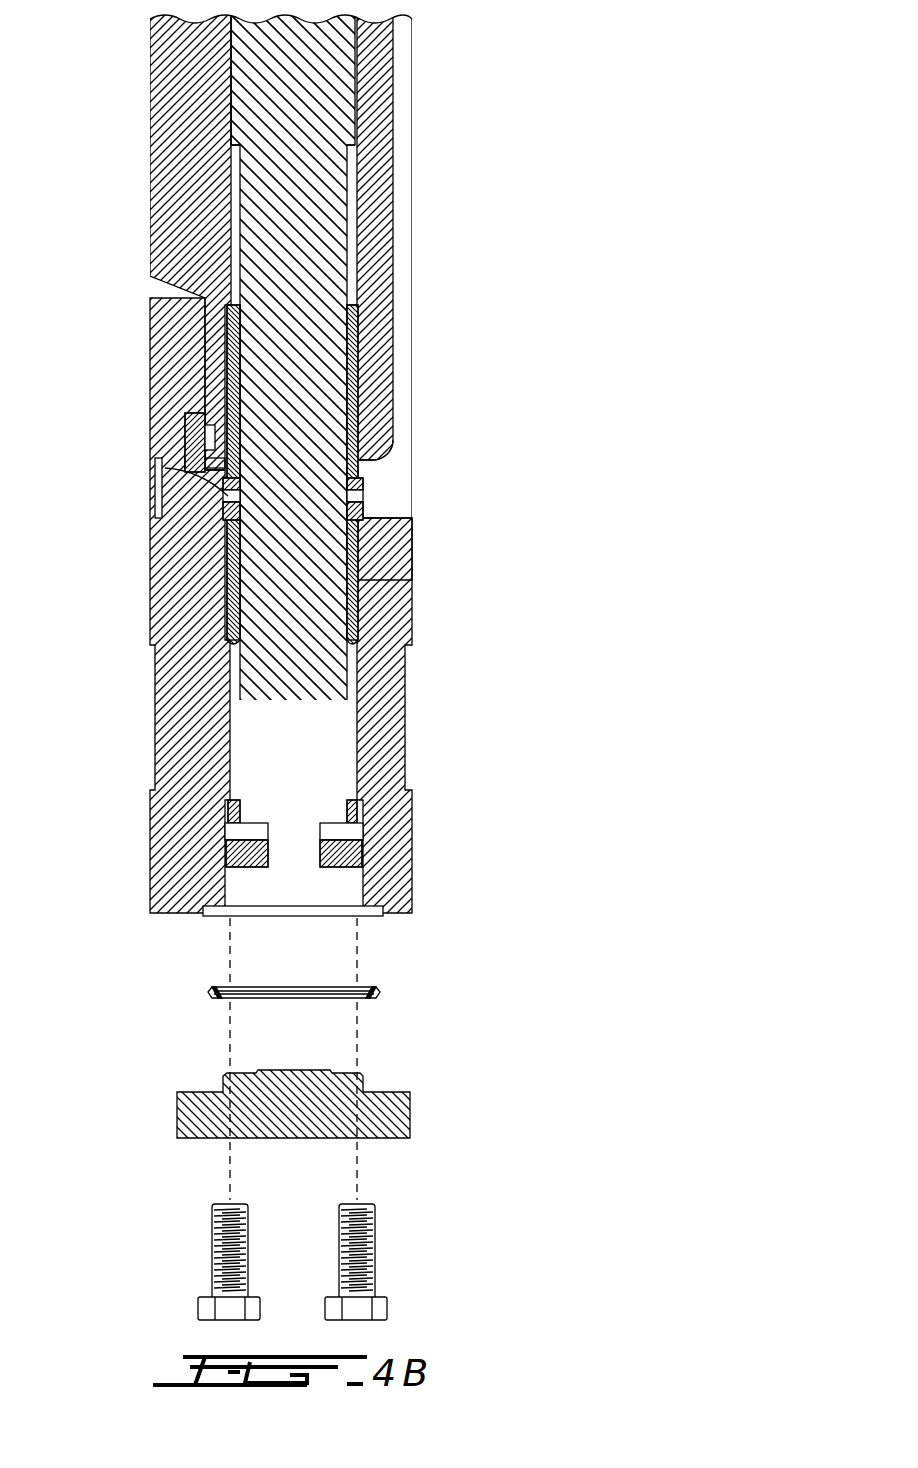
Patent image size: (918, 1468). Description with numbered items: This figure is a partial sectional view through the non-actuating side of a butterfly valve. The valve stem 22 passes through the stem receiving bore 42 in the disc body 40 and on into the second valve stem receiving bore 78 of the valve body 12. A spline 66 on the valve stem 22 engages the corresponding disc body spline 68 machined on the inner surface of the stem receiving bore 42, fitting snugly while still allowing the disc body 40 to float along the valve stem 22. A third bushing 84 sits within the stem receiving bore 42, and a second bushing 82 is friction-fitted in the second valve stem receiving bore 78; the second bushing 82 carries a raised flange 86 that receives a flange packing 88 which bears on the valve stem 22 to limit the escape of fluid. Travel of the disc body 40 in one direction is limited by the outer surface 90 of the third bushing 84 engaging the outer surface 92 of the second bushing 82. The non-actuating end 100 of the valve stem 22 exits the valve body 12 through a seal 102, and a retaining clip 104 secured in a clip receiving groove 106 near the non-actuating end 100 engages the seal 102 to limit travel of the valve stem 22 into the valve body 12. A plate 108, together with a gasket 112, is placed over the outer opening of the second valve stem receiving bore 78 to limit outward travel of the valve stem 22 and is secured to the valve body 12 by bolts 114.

The valve body 12 is at (387, 745).
The valve stem 22 is at (295, 600).
The disc body 40 is at (183, 163).
The stem receiving bore 42 is at (338, 215).
The spline 66 is at (260, 85).
The disc body spline 68 is at (230, 48).
The second valve stem receiving bore 78 is at (230, 728).
The second bushing 82 is at (357, 602).
The third bushing 84 is at (353, 335).
The raised flange 86 is at (360, 513).
The flange packing 88 is at (360, 492).
The outer surface of the third bushing 90 is at (228, 496).
The outer surface of the second bushing 92 is at (367, 458).
The non-actuating end 100 is at (293, 893).
The seal 102 is at (355, 805).
The retaining clip 104 is at (345, 852).
The clip receiving groove 106 is at (267, 843).
The plate 108 is at (393, 1113).
The gasket 112 is at (210, 988).
The bolts 114 is at (363, 1237).